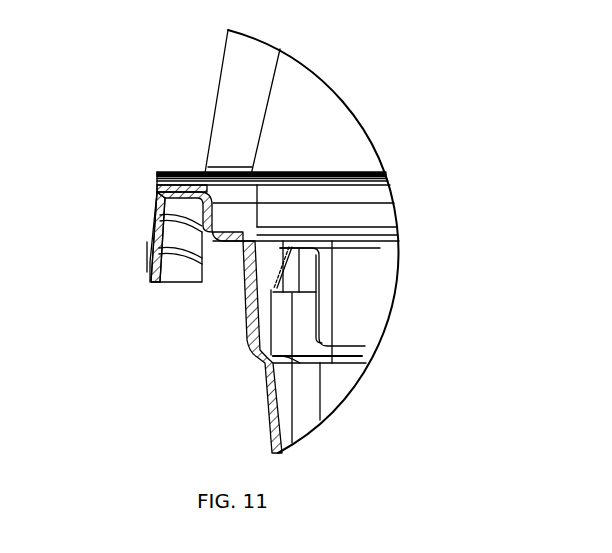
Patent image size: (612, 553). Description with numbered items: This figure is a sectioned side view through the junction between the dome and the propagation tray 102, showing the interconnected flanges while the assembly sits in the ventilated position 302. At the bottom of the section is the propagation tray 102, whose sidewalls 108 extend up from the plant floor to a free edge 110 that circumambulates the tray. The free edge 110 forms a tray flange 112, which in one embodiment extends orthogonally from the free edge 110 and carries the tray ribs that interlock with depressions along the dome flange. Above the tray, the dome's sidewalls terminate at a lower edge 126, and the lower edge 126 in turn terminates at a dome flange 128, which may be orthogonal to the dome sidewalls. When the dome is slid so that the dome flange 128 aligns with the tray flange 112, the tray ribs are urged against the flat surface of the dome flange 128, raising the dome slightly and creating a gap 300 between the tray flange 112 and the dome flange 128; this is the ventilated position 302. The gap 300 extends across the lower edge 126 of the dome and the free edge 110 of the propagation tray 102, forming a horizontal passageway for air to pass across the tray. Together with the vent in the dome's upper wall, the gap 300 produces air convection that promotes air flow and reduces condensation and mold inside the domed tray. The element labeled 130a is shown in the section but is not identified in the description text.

The ventilated position 302 is at (177, 112).
The lower edge 126 is at (208, 155).
The dome flange 128 is at (160, 174).
The gap 300 is at (157, 190).
The retention clip 130a is at (157, 218).
The tray flange 112 is at (157, 250).
The free edge 110 is at (355, 203).
The sidewalls 108 is at (367, 218).
The propagation tray 102 is at (353, 273).